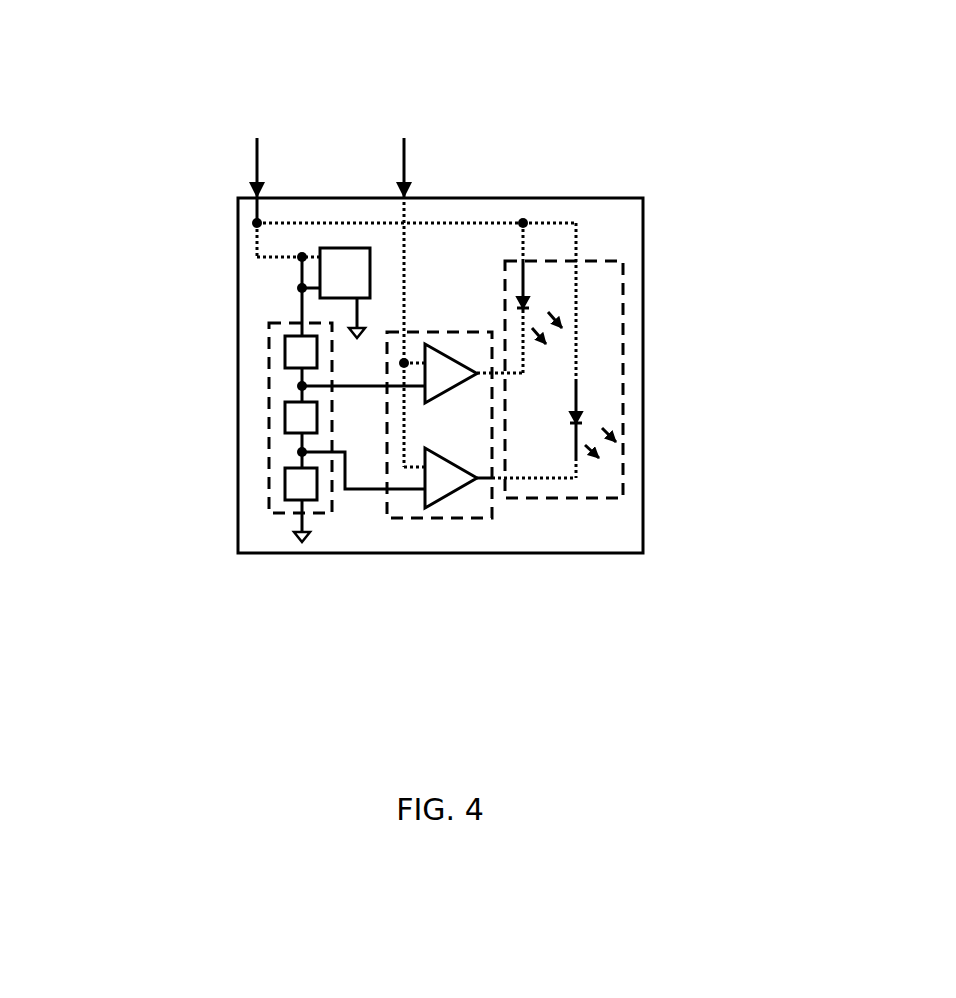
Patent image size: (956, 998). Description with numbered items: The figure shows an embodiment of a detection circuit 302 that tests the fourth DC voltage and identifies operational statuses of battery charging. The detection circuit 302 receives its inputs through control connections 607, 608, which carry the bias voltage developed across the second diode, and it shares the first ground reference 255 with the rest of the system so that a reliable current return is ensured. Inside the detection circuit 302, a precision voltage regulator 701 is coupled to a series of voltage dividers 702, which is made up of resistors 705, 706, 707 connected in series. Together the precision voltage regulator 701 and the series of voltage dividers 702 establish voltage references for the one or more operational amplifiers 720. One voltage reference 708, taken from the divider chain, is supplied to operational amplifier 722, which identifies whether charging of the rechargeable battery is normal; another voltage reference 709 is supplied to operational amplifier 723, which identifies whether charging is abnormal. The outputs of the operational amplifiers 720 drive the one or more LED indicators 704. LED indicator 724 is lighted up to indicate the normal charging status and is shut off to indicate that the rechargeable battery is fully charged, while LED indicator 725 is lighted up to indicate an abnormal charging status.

The detection circuit 302 is at (490, 196).
The control connection 607 is at (257, 138).
The control connection 608 is at (404, 138).
The precision voltage regulator 701 is at (345, 247).
The resistor 705 is at (283, 350).
The voltage reference 708 is at (300, 386).
The series of voltage dividers 702 is at (267, 402).
The resistor 706 is at (285, 420).
The voltage reference 709 is at (300, 453).
The resistor 707 is at (287, 488).
The first ground reference 255 is at (302, 542).
The operational amplifiers 720 is at (422, 522).
The operational amplifier 722 is at (445, 352).
The operational amplifier 723 is at (447, 498).
The LED indicators 704 is at (625, 262).
The LED indicator 724 is at (526, 298).
The LED indicator 725 is at (580, 408).